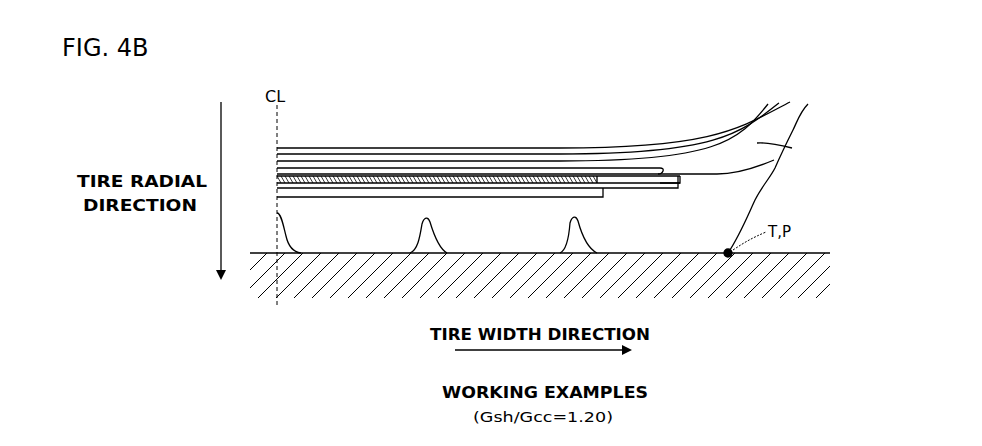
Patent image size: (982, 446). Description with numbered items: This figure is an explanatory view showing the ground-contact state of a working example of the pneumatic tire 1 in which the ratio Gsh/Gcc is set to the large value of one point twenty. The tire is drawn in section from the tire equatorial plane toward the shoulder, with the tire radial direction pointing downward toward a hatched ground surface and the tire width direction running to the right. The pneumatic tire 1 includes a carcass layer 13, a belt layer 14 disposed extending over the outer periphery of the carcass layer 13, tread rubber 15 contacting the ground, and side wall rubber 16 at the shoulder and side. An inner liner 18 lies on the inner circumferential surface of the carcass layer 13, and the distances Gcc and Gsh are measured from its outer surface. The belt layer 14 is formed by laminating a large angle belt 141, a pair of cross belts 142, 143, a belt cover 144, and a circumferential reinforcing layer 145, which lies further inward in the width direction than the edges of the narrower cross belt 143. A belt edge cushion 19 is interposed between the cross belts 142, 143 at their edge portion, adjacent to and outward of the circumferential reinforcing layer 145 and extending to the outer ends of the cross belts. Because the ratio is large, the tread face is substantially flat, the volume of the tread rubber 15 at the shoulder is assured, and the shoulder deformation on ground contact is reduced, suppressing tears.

The pneumatic tire 1 is at (750, 63).
The carcass layer 13 is at (703, 140).
The belt layer 14 is at (630, 100).
The large angle belt 141 is at (613, 165).
The cross belt 142 is at (567, 172).
The cross belt 143 is at (473, 187).
The belt cover 144 is at (427, 195).
The circumferential reinforcing layer 145 is at (522, 180).
The tread rubber 15 is at (750, 193).
The side wall rubber 16 is at (792, 148).
The inner liner 18 is at (382, 148).
The belt edge cushion 19 is at (673, 178).